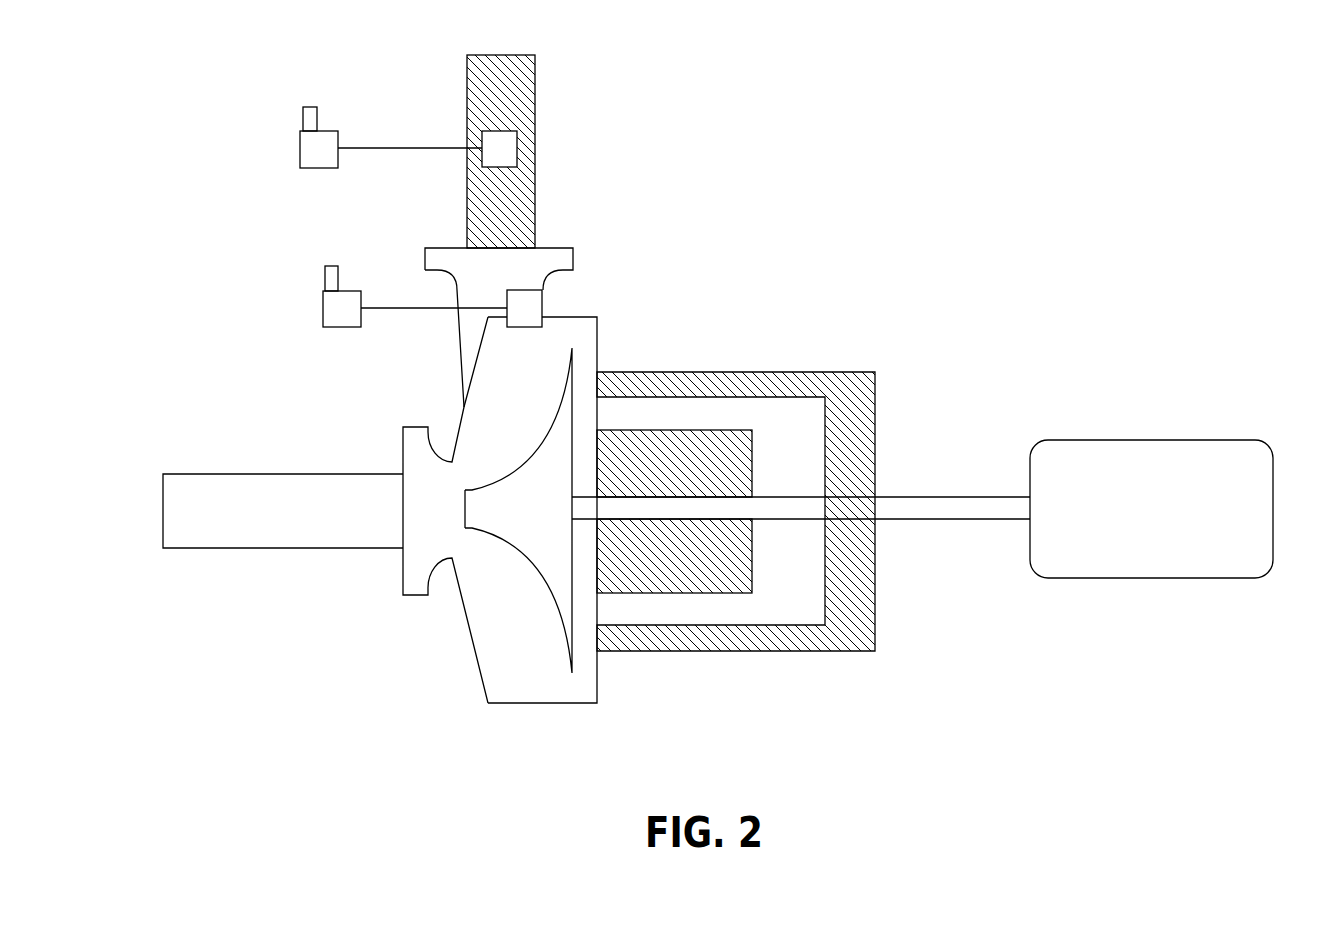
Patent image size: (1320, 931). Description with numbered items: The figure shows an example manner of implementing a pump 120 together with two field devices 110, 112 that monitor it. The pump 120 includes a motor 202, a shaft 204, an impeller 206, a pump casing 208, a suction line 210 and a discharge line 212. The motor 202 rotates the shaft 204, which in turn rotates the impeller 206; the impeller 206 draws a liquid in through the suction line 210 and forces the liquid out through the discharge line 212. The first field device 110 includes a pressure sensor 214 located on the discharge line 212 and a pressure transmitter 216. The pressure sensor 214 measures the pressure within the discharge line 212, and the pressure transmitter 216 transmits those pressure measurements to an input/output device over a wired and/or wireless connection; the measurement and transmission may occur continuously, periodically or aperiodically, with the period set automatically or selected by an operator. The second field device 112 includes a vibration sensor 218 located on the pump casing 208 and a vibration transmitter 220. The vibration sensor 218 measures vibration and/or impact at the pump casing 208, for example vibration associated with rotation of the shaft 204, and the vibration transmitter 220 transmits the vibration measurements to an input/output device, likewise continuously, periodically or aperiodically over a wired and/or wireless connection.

The field device 110 is at (452, 115).
The field device 112 is at (526, 283).
The pump 120 is at (1063, 322).
The motor 202 is at (1175, 440).
The shaft 204 is at (910, 495).
The impeller 206 is at (557, 420).
The pump casing 208 is at (585, 316).
The suction line 210 is at (220, 473).
The discharge line 212 is at (534, 56).
The pressure sensor 214 is at (495, 152).
The pressure transmitter 216 is at (302, 132).
The vibration sensor 218 is at (525, 308).
The vibration transmitter 220 is at (323, 292).